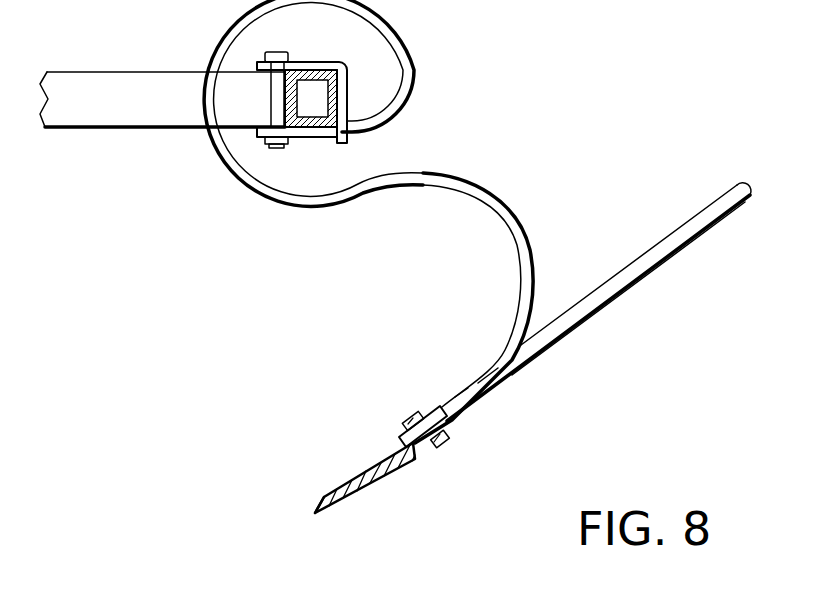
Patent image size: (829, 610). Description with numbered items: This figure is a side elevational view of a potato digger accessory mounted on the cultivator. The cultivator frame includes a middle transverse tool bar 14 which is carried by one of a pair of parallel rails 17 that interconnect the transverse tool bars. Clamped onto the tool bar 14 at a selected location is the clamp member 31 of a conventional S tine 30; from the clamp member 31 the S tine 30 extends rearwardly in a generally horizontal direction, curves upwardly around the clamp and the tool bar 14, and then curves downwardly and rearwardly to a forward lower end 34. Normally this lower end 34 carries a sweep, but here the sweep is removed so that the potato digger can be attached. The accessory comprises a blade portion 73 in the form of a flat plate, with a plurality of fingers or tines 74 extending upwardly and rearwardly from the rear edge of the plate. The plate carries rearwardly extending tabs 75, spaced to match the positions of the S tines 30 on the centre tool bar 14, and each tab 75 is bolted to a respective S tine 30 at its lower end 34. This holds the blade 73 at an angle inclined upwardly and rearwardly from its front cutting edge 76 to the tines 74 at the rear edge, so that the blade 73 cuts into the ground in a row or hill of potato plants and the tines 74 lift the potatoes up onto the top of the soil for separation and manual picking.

The parallel rail 17 is at (100, 72).
The middle transverse tool bar 14 is at (298, 97).
The clamp member 31 is at (343, 58).
The S tine 30 is at (498, 193).
The fingers or tines 74 is at (640, 277).
The rearwardly extending tab 75 is at (432, 410).
The forward lower end 34 is at (424, 447).
The blade portion 73 is at (357, 474).
The front cutting edge 76 is at (314, 511).